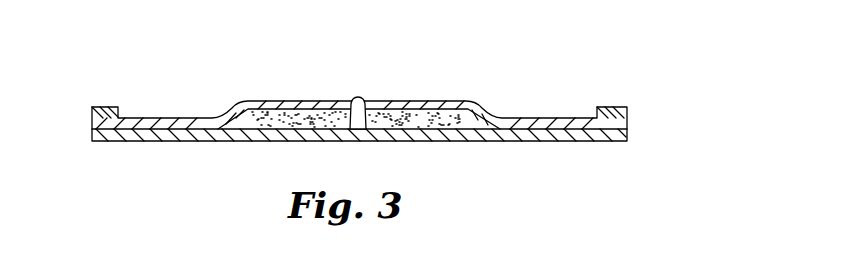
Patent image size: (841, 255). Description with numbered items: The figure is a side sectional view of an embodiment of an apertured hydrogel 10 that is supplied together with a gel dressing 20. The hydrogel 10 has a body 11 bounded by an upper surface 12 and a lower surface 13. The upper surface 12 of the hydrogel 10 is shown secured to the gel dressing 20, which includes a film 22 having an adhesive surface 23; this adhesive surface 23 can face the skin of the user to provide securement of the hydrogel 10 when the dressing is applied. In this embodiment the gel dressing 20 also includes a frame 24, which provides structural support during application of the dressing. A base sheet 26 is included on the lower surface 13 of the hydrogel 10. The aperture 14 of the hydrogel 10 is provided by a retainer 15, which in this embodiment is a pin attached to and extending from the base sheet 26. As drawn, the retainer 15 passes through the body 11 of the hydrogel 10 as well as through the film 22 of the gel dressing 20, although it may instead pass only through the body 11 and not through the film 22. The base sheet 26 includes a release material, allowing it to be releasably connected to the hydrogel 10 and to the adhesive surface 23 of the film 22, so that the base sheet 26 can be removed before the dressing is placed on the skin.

The gel dressing 20 is at (600, 50).
The film 22 is at (161, 118).
The base sheet 26 is at (190, 135).
The frame 24 is at (107, 115).
The apertured hydrogel 10 is at (293, 105).
The retainer 15 is at (360, 107).
The aperture 14 is at (348, 95).
The upper surface 12 is at (253, 107).
The body 11 is at (443, 112).
The lower surface 13 is at (262, 130).
The adhesive surface 23 is at (132, 129).